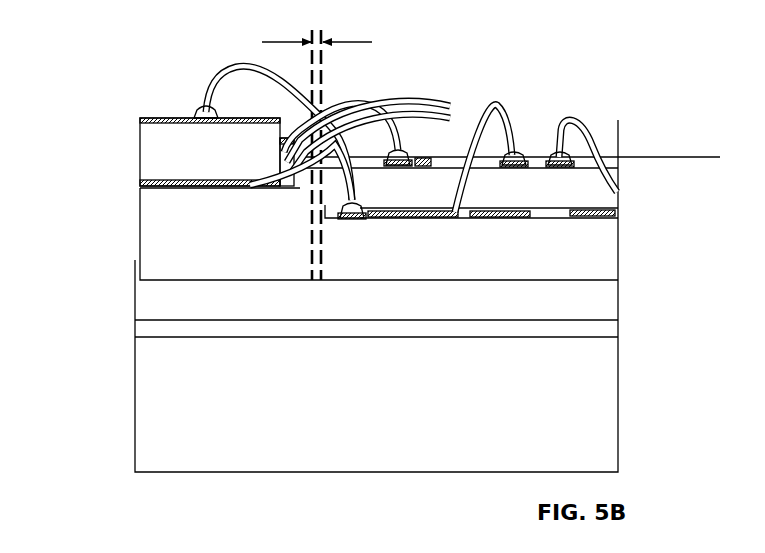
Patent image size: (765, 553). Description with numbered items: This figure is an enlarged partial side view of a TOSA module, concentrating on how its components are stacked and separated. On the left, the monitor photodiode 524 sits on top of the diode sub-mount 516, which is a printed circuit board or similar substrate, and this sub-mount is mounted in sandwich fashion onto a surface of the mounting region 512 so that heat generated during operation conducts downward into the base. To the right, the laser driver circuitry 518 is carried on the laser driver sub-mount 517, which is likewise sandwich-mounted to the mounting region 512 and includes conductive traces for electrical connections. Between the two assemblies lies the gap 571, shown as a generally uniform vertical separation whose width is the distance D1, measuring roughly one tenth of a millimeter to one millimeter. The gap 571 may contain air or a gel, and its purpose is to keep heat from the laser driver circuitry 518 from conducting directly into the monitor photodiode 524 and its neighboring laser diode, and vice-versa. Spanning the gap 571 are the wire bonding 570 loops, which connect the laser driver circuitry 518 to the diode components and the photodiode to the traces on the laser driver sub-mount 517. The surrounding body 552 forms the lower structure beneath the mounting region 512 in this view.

The wire bonding 570 is at (210, 74).
The monitor photodiode 524 is at (160, 140).
The laser driver circuitry 518 is at (453, 155).
The laser driver sub-mount 517 is at (408, 235).
The gap 571 is at (318, 252).
The diode sub-mount 516 is at (148, 237).
The mounting region 512 is at (150, 302).
The housing 552 is at (133, 422).
The distance D1 is at (317, 43).